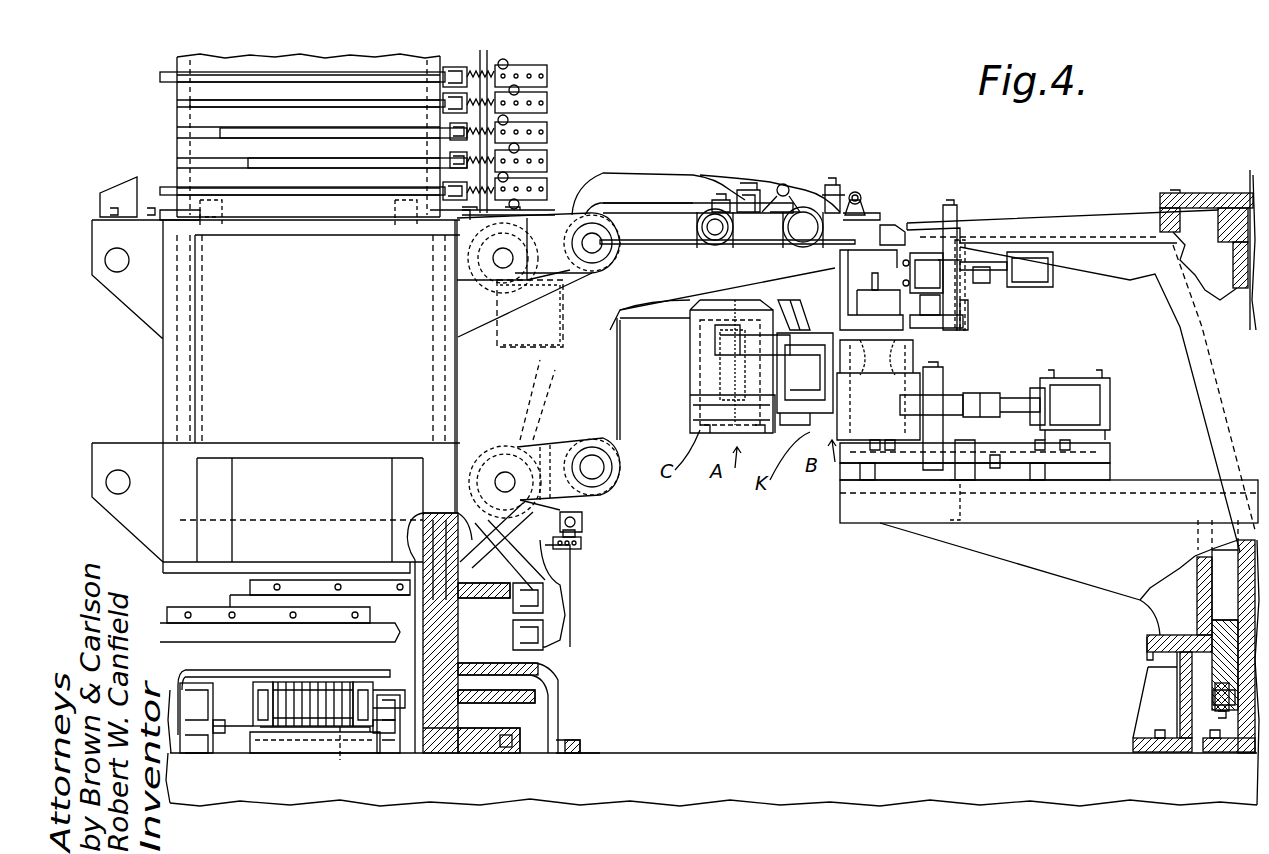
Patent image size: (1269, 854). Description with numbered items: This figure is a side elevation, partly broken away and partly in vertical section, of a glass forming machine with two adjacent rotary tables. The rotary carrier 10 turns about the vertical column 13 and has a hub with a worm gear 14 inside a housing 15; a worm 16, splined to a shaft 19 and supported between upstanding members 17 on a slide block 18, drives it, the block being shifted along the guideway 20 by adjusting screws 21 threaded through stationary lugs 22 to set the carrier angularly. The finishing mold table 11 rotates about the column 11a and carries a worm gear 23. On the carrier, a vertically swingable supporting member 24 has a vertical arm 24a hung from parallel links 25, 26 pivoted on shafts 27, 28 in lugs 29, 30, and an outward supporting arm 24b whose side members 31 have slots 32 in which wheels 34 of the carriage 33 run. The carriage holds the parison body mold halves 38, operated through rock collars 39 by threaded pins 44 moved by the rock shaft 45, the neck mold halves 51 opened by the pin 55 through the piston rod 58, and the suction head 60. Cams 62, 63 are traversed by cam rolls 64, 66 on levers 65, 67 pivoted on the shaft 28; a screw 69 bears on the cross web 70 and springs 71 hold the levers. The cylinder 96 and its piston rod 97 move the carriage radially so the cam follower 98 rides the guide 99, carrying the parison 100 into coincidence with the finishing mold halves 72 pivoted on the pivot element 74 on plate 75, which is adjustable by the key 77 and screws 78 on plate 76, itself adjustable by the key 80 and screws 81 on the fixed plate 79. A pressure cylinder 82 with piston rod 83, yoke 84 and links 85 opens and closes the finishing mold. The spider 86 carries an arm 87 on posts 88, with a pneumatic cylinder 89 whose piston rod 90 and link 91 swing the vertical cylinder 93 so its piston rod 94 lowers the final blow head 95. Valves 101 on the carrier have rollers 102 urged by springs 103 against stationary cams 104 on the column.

The rotary carrier 10 is at (457, 405).
The finishing mold table 11 is at (840, 518).
The vertical column 11a is at (1237, 598).
The vertical post or column 13 is at (423, 555).
The worm gear 14 is at (560, 685).
The housing 15 is at (560, 718).
The worm 16 is at (312, 728).
The upstanding members 17 is at (358, 685).
The slide block 18 is at (285, 740).
The shaft 19 is at (385, 690).
The guideway 20 is at (347, 758).
The adjusting and positioning screws 21 is at (395, 720).
The stationary lugs 22 is at (405, 753).
The worm gear 23 is at (1210, 698).
The vertically swingable supporting member 24 is at (585, 185).
The vertical arm 24a is at (618, 372).
The supporting arm 24b is at (665, 172).
The parallel links 25 is at (552, 218).
The parallel links 26 is at (560, 440).
The transverse horizontal shaft 27 is at (506, 262).
The transverse horizontal shaft 28 is at (506, 475).
The outstanding ears or lugs 29 is at (500, 333).
The outstanding ears or lugs 30 is at (466, 450).
The side members 31 is at (675, 318).
The longitudinal slots 32 is at (660, 248).
The carriage 33 is at (690, 362).
The wheels 34 is at (800, 205).
The half sections of parison body mold 38 is at (805, 430).
The rock collars 39 is at (740, 360).
The vertically reciprocable pins 44 is at (745, 195).
The rock shaft 45 is at (780, 185).
The halves of parison neck mold 51 is at (888, 300).
The vertically reciprocable pin 55 is at (858, 192).
The piston rod 58 is at (830, 190).
The head 60 is at (885, 270).
The cam 62 is at (423, 635).
The cam 63 is at (470, 600).
The cam roll 64 is at (545, 635).
The lever 65 is at (572, 600).
The cam roll 66 is at (545, 583).
The lever 67 is at (505, 568).
The motion transmitting screw 69 is at (580, 545).
The cross web 70 is at (528, 440).
The springs 71 is at (585, 512).
The half sections of finishing mold 72 is at (913, 352).
The vertical pivot element 74 is at (955, 380).
The plate 75 is at (975, 441).
The plate 76 is at (1112, 465).
The radial key 77 is at (1110, 447).
The screws 78 is at (870, 470).
The plate 79 is at (1020, 485).
The key 80 is at (975, 485).
The screws 81 is at (880, 480).
The pressure cylinder 82 is at (1085, 378).
The piston rod 83 is at (1040, 388).
The cross yoke or head 84 is at (1020, 398).
The links 85 is at (945, 390).
The spider 86 is at (1160, 200).
The radially extending arm 87 is at (1010, 225).
The vertical posts 88 is at (985, 322).
The pneumatic cylinder 89 is at (1053, 278).
The piston rod 90 is at (985, 276).
The link 91 is at (962, 255).
The vertical pneumatic cylinder 93 is at (950, 210).
The piston rod 94 is at (958, 308).
The final blow head 95 is at (940, 338).
The cylinder 96 is at (540, 350).
The piston rod 97 is at (650, 318).
The cam follower 98 is at (930, 253).
The positioning cam or guide 99 is at (895, 225).
The parison 100 is at (814, 318).
The valves 101 is at (548, 130).
The rollers 102 is at (458, 68).
The springs 103 is at (475, 72).
The stationary cams 104 is at (280, 147).